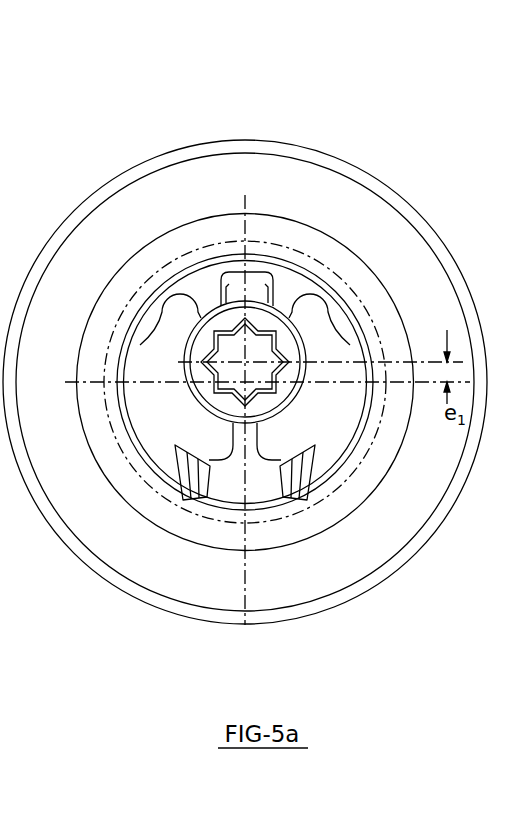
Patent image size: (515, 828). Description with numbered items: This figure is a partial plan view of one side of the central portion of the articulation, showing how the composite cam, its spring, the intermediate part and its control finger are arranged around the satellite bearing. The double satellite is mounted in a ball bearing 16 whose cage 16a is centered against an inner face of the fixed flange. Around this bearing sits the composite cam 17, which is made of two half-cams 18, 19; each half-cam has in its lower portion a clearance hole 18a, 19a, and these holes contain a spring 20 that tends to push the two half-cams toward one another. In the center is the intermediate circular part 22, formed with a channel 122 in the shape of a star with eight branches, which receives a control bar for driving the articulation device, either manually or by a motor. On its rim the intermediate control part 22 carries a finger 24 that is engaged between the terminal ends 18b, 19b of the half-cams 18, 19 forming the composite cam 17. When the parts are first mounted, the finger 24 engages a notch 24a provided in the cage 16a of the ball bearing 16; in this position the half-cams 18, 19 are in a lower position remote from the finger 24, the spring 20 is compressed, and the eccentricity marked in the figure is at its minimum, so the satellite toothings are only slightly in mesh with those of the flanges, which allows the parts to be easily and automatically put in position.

The ball bearing 16 is at (197, 527).
The cage 16a is at (283, 482).
The composite cam 17 is at (157, 340).
The half-cam 18 is at (143, 418).
The clearance hole 18a is at (175, 492).
The terminal end 18b is at (173, 312).
The half-cam 19 is at (367, 432).
The clearance hole 19a is at (320, 490).
The terminal end 19b is at (320, 318).
The spring 20 is at (292, 470).
The intermediate circular part 22 is at (220, 318).
The finger 24 is at (259, 290).
The notch 24a is at (223, 296).
The channel 122 is at (258, 353).